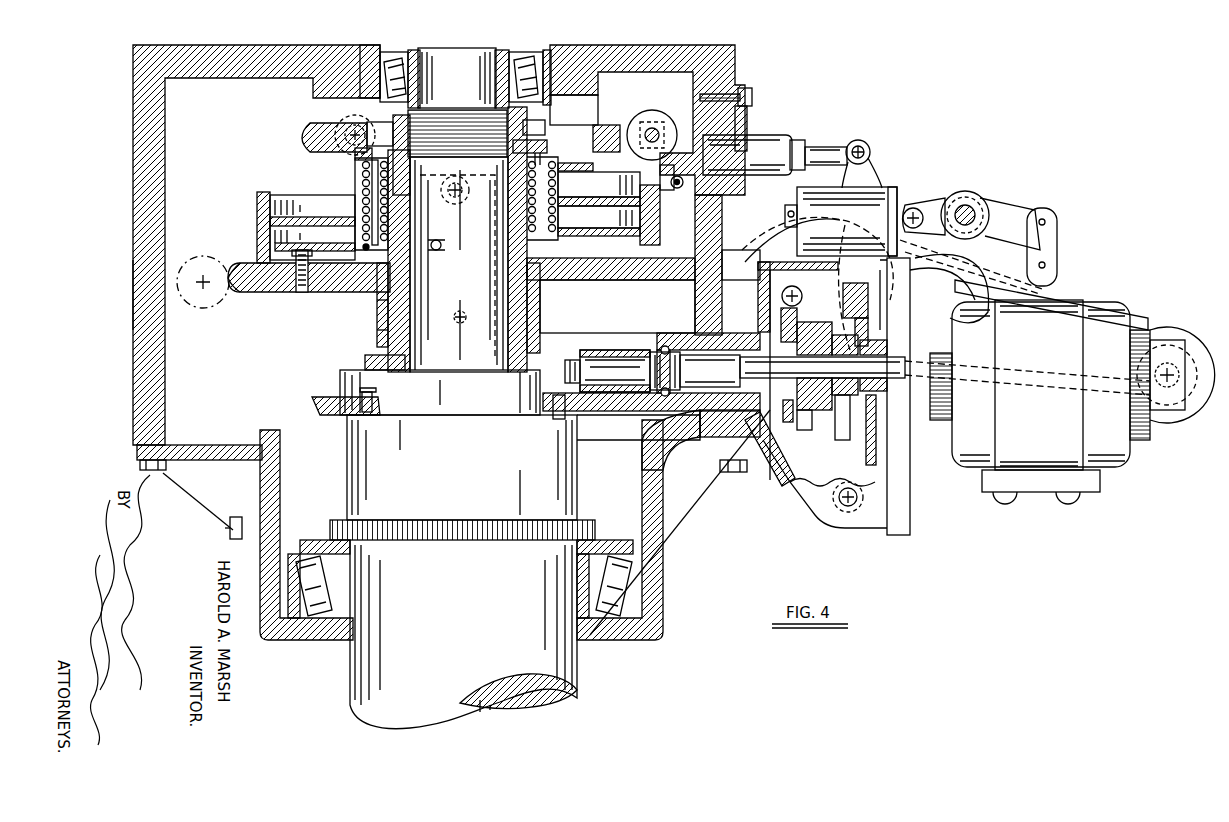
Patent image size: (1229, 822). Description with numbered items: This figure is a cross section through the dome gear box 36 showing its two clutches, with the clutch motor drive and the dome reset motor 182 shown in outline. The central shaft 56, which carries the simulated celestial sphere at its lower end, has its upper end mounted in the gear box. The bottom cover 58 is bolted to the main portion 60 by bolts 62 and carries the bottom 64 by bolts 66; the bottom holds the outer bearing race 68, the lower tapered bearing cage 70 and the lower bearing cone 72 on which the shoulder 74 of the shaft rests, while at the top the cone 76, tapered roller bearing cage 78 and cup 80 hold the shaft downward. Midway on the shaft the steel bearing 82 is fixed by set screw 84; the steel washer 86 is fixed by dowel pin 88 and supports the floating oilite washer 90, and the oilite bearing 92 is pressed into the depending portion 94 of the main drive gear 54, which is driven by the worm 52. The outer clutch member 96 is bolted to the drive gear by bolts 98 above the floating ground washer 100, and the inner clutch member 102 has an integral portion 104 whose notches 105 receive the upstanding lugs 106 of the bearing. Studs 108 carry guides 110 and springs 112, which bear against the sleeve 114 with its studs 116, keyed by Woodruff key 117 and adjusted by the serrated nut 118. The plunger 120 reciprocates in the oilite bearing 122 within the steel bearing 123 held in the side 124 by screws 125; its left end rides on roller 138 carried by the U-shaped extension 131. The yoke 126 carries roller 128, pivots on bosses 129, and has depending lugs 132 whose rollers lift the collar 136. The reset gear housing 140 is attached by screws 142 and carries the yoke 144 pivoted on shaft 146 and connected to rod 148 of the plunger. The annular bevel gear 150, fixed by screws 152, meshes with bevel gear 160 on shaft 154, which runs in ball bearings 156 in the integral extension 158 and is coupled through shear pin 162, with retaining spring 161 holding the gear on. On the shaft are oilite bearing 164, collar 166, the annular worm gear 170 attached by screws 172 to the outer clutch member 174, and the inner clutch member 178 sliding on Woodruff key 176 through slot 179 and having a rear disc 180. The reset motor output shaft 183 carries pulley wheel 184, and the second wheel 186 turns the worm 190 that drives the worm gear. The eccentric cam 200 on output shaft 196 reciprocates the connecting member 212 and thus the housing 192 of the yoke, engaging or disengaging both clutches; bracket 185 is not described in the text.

The dome gear box 36 is at (133, 240).
The worm 52 is at (185, 302).
The main drive gear 54 is at (232, 292).
The central shaft 56 is at (370, 700).
The bottom cover 58 is at (232, 450).
The main portion 60 is at (133, 312).
The bolts 62 is at (152, 470).
The bottom 64 is at (660, 632).
The bolts 66 is at (234, 517).
The outer bearing race 68 is at (628, 620).
The lower tapered bearing cage 70 is at (605, 618).
The lower bearing cone 72 is at (584, 620).
The shoulder 74 is at (334, 528).
The cone 76 is at (412, 52).
The tapered roller bearing cage 78 is at (394, 52).
The cup 80 is at (370, 45).
The steel bearing 82 is at (377, 336).
The set screw 84 is at (464, 323).
The steel washer 86 is at (362, 396).
The dowel pin 88 is at (380, 376).
The floating oilite washer 90 is at (365, 362).
The oilite bearing 92 is at (377, 318).
The depending portion 94 is at (377, 300).
The outer clutch member 96 is at (257, 250).
The bolts 98 is at (300, 292).
The floating ground washer 100 is at (345, 292).
The inner clutch member 102 is at (272, 196).
The integral portion 104 is at (355, 208).
The notches 105 is at (560, 215).
The upstanding lugs 106 is at (558, 238).
The studs 108 is at (358, 240).
The guides 110 is at (355, 190).
The springs 112 is at (355, 155).
The sleeve 114 is at (302, 136).
The studs 116 is at (545, 160).
The Woodruff key 117 is at (528, 118).
The serrated nut 118 is at (372, 120).
The plunger 120 is at (790, 138).
The oilite bearing 122 is at (752, 132).
The steel bearing 123 is at (742, 94).
The side 124 is at (705, 222).
The screws 125 is at (752, 94).
The yoke 126 is at (568, 132).
The roller 128 is at (650, 110).
The bosses 129 is at (345, 118).
The U-shaped extension 131 is at (665, 200).
The depending lugs 132 is at (458, 210).
The collar 136 is at (575, 172).
The roller 138 is at (671, 182).
The reset gear housing 140 is at (818, 518).
The screws 142 is at (765, 430).
The yoke 144 is at (890, 292).
The shaft 146 is at (846, 507).
The rod 148 is at (850, 140).
The annular bevel gear 150 is at (320, 405).
The screws 152 is at (372, 410).
The shaft 154 is at (690, 368).
The ball bearings 156 is at (662, 400).
The integral extension 158 is at (688, 333).
The bevel gear 160 is at (598, 352).
The retaining spring 161 is at (568, 358).
The shear pin 162 is at (655, 358).
The oilite bearing 164 is at (785, 470).
The collar 166 is at (808, 430).
The annular worm gear 170 is at (788, 422).
The screws 172 is at (798, 325).
The outer clutch member 174 is at (846, 295).
The Woodruff key 176 is at (890, 342).
The inner clutch member 178 is at (838, 440).
The slot 179 is at (824, 368).
The rear disc 180 is at (872, 420).
The dome reset motor 182 is at (1115, 450).
The output shaft 183 is at (1155, 312).
The pulley wheel 184 is at (1172, 326).
The bracket 185 is at (1070, 300).
The second wheel 186 is at (745, 245).
The worm 190 is at (772, 242).
The housing 192 is at (880, 210).
The output shaft 196 is at (965, 203).
The eccentric cam 200 is at (975, 202).
The connecting member 212 is at (940, 200).